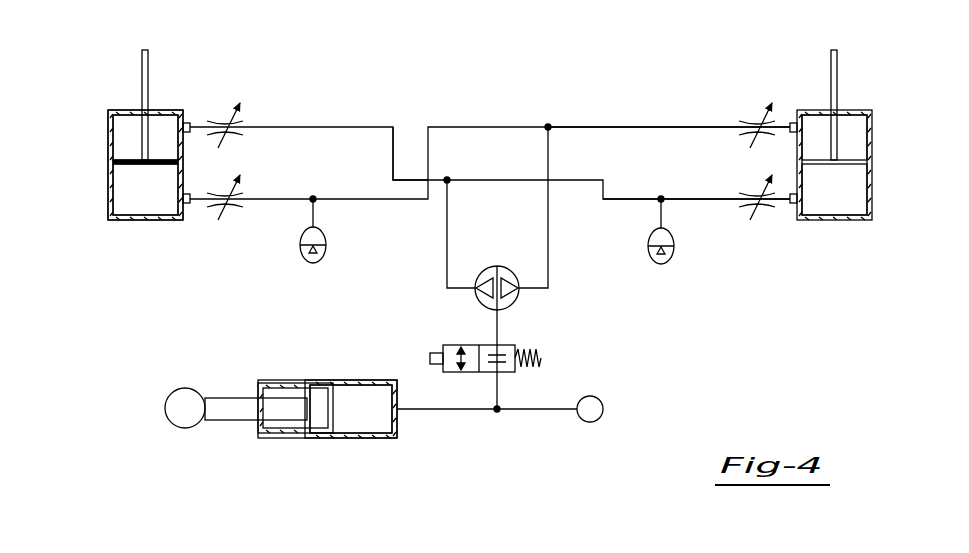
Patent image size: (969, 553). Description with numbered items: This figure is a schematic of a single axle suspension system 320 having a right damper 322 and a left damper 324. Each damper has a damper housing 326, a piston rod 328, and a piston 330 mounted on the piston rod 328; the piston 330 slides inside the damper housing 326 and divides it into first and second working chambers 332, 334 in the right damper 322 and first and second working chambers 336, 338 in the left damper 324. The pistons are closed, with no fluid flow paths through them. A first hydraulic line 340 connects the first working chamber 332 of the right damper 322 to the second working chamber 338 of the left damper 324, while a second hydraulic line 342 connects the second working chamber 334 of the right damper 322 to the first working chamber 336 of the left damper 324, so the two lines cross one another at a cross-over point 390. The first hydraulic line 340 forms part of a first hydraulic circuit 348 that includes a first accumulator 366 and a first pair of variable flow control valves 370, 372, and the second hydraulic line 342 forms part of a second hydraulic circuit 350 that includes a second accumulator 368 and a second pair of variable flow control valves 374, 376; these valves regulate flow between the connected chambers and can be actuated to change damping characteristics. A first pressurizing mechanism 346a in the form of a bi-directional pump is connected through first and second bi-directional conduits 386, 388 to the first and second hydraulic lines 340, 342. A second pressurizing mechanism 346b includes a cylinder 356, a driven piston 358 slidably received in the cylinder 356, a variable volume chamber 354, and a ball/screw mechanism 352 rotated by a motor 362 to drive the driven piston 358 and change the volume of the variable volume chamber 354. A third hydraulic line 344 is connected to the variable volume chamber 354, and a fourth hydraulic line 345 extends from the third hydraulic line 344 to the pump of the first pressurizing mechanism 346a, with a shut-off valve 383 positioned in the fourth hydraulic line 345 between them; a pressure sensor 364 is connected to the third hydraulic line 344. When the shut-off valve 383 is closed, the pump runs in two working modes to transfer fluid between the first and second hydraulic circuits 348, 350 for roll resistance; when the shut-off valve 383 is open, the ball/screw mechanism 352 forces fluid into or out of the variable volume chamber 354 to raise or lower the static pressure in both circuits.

The single axle suspension system 320 is at (281, 454).
The right damper 322 is at (876, 100).
The left damper 324 is at (104, 98).
The damper housing 326 is at (108, 182).
The piston rod 328 is at (142, 58).
The piston 330 is at (125, 162).
The first working chamber of the right damper 332 is at (815, 125).
The second working chamber of the right damper 334 is at (848, 202).
The first working chamber of the left damper 336 is at (172, 125).
The second working chamber of the left damper 338 is at (137, 202).
The first hydraulic line 340 is at (688, 124).
The second hydraulic line 342 is at (716, 196).
The third hydraulic line 344 is at (461, 411).
The fourth hydraulic line 345 is at (498, 330).
The first pressurizing mechanism 346a is at (497, 265).
The second pressurizing mechanism 346b is at (310, 448).
The first hydraulic circuit 348 is at (580, 122).
The second hydraulic circuit 350 is at (578, 176).
The ball/screw mechanism 352 is at (228, 420).
The variable volume chamber 354 is at (362, 420).
The cylinder 356 is at (400, 437).
The driven piston 358 is at (278, 435).
The motor 362 is at (164, 408).
The pressure sensor 364 is at (604, 409).
The first accumulator 366 is at (302, 257).
The second accumulator 368 is at (670, 260).
The first variable flow control valve 370 is at (749, 118).
The second variable flow control valve 372 is at (235, 210).
The third variable flow control valve 374 is at (763, 210).
The fourth variable flow control valve 376 is at (221, 118).
The shut-off valve 383 is at (449, 344).
The first bi-directional conduit 386 is at (548, 236).
The second bi-directional conduit 388 is at (447, 236).
The cross-over point 390 is at (426, 176).